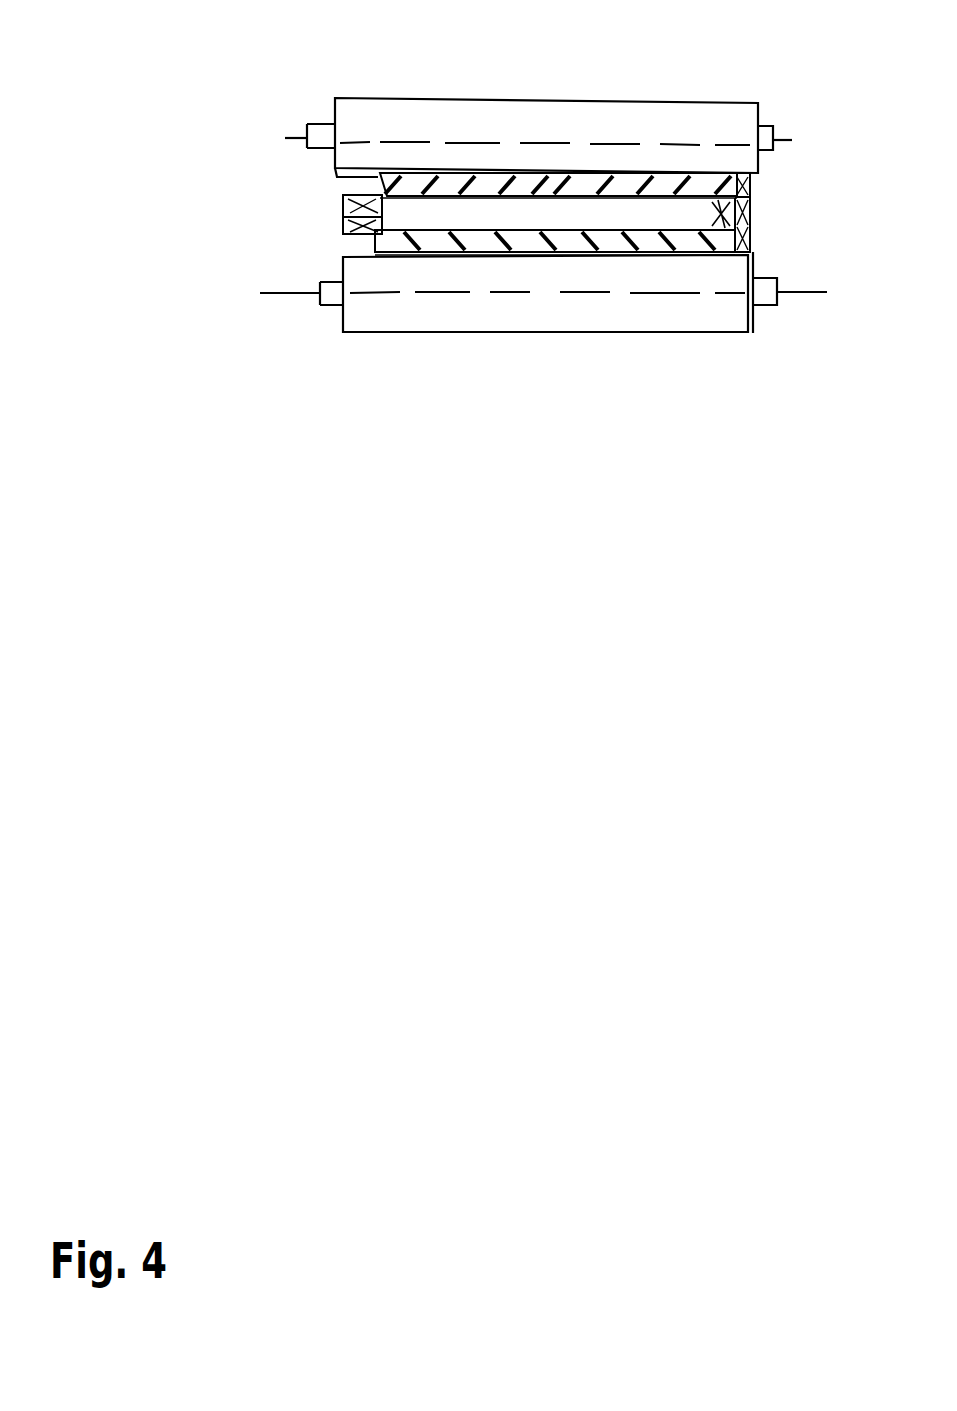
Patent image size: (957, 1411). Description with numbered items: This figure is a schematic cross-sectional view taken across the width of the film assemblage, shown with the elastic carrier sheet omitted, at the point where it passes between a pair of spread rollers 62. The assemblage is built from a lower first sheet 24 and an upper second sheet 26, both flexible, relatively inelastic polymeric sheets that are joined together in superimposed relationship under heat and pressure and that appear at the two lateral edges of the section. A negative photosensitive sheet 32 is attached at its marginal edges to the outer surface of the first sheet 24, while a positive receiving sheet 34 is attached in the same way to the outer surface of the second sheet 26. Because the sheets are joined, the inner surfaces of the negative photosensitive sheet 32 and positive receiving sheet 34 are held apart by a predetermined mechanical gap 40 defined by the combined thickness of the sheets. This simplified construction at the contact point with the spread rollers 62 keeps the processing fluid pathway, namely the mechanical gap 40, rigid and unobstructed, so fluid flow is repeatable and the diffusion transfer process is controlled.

The spread rollers 62 is at (355, 113).
The positive receiving sheet 34 is at (545, 173).
The mechanical gap 40 is at (547, 213).
The negative photosensitive sheet 32 is at (680, 245).
The second sheet 26 is at (343, 203).
The first sheet 24 is at (343, 233).